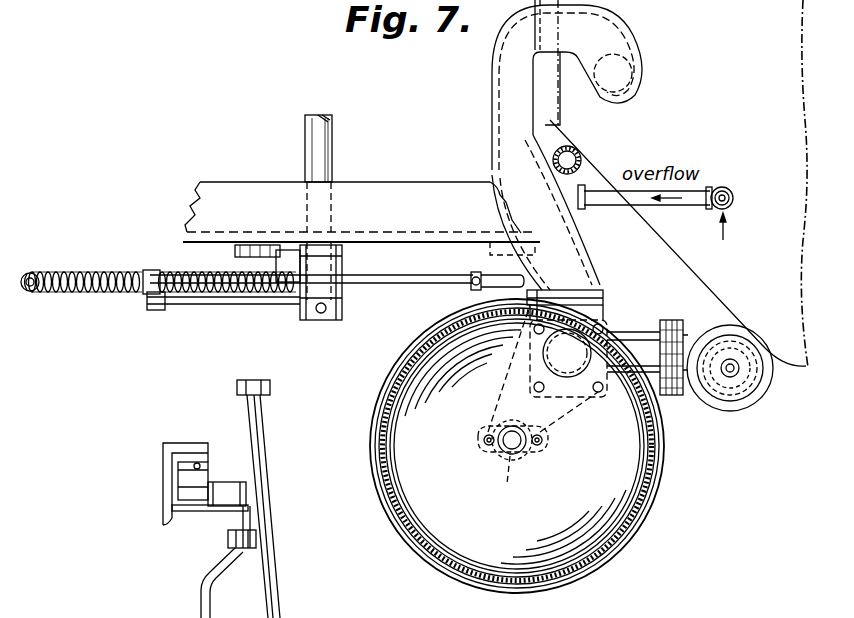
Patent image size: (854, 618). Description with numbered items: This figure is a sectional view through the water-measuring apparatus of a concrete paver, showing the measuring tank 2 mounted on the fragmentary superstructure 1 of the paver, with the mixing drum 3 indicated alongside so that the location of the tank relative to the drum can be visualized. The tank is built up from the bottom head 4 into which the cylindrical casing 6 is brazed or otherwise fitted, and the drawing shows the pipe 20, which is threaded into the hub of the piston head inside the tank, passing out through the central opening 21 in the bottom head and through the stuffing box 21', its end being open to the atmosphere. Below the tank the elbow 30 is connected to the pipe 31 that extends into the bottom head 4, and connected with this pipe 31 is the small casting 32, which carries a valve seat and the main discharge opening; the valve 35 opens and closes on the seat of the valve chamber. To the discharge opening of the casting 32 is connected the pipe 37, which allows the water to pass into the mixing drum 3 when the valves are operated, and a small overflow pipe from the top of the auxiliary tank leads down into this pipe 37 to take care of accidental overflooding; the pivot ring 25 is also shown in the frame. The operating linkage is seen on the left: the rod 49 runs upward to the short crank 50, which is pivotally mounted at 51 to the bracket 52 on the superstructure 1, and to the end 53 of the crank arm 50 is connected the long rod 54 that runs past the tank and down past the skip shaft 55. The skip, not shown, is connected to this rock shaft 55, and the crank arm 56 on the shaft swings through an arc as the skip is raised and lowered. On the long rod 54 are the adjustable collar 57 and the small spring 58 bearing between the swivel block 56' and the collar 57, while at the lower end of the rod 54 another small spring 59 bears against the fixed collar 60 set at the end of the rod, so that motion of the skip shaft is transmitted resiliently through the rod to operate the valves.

The superstructure 1 is at (165, 468).
The measuring tank 2 is at (647, 518).
The mixing drum 3 is at (690, 248).
The bottom head 4 is at (617, 475).
The cylindrical casing 6 is at (591, 556).
The pipe 20 is at (499, 449).
The central opening 21 is at (530, 459).
The stuffing box 21' is at (512, 482).
The pivot ring 25 is at (584, 156).
The elbow 30 is at (690, 342).
The pipe 31 is at (638, 346).
The small casting 32 is at (540, 343).
The valve 35 is at (748, 392).
The pipe 37 is at (500, 124).
The rod 49 is at (272, 600).
The short crank 50 is at (252, 454).
The pivot 51 is at (234, 494).
The bracket 52 is at (176, 492).
The end of crank arm 53 is at (250, 521).
The long rod 54 is at (398, 283).
The skip shaft 55 is at (305, 147).
The crank arm 56 is at (244, 291).
The swivel block 56' is at (135, 264).
The adjustable collar 57 is at (478, 272).
The small spring 58 is at (205, 277).
The small spring 59 is at (90, 291).
The fixed collar 60 is at (33, 275).